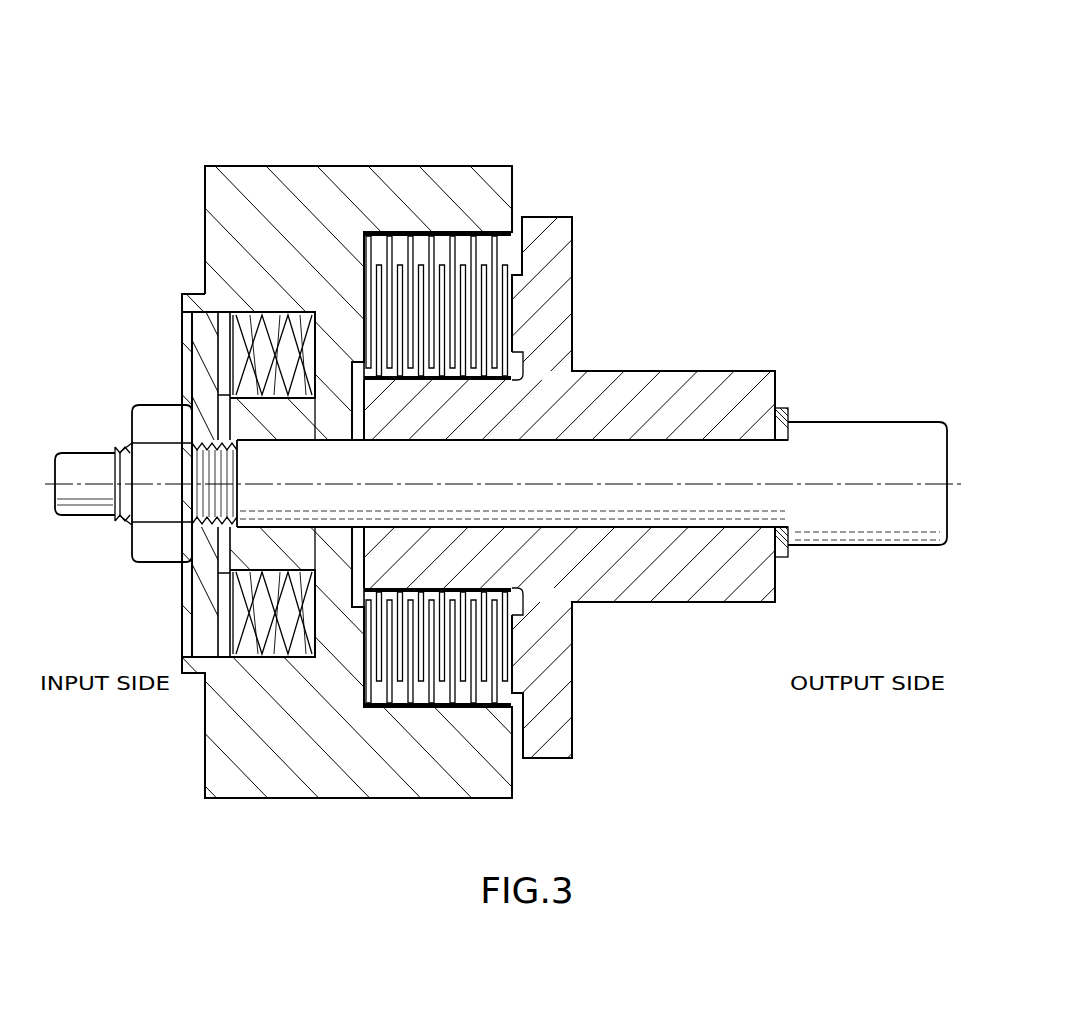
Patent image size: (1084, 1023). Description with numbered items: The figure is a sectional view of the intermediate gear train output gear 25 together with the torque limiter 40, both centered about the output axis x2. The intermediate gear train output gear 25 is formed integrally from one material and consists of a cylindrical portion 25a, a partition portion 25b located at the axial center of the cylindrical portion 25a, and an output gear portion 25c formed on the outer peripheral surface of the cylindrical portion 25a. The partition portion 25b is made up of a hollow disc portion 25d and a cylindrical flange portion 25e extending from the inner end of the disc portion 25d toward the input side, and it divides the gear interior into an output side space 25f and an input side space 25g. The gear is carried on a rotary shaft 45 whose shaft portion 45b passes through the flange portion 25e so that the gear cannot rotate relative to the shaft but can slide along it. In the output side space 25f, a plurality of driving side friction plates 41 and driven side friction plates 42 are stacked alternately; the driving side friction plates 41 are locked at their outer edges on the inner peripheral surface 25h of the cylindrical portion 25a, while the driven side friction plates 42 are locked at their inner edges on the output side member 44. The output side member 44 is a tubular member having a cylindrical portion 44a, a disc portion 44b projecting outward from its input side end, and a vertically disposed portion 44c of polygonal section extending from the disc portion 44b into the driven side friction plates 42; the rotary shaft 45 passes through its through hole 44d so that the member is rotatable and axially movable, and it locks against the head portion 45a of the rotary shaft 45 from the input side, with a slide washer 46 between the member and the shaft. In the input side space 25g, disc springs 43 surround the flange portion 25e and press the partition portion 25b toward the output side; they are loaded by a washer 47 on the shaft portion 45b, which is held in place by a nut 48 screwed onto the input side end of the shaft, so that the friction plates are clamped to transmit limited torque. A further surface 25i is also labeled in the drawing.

The intermediate gear train output gear 25 is at (336, 100).
The cylindrical portion 25a is at (285, 212).
The partition portion 25b is at (337, 692).
The output gear portion 25c is at (225, 802).
The disc portion 25d is at (335, 615).
The flange portion 25e is at (262, 545).
The output side space 25f is at (480, 335).
The input side space 25g is at (232, 380).
The inner peripheral surface 25h is at (465, 240).
The housing cavity 25i is at (237, 347).
The torque limiter 40 is at (477, 406).
The driving side friction plate 41 is at (368, 245).
The driven side friction plate 42 is at (378, 266).
The disc spring 43 is at (240, 330).
The output side member 44 is at (542, 517).
The cylindrical portion 44a is at (730, 369).
The disc portion 44b is at (550, 740).
The vertically disposed portion 44c is at (450, 570).
The through hole 44d is at (782, 458).
The rotary shaft 45 is at (760, 488).
The head portion 45a is at (846, 518).
The shaft portion 45b is at (633, 500).
The slide washer 46 is at (790, 408).
The washer 47 is at (200, 620).
The nut 48 is at (158, 425).
The output axis x2 is at (78, 470).